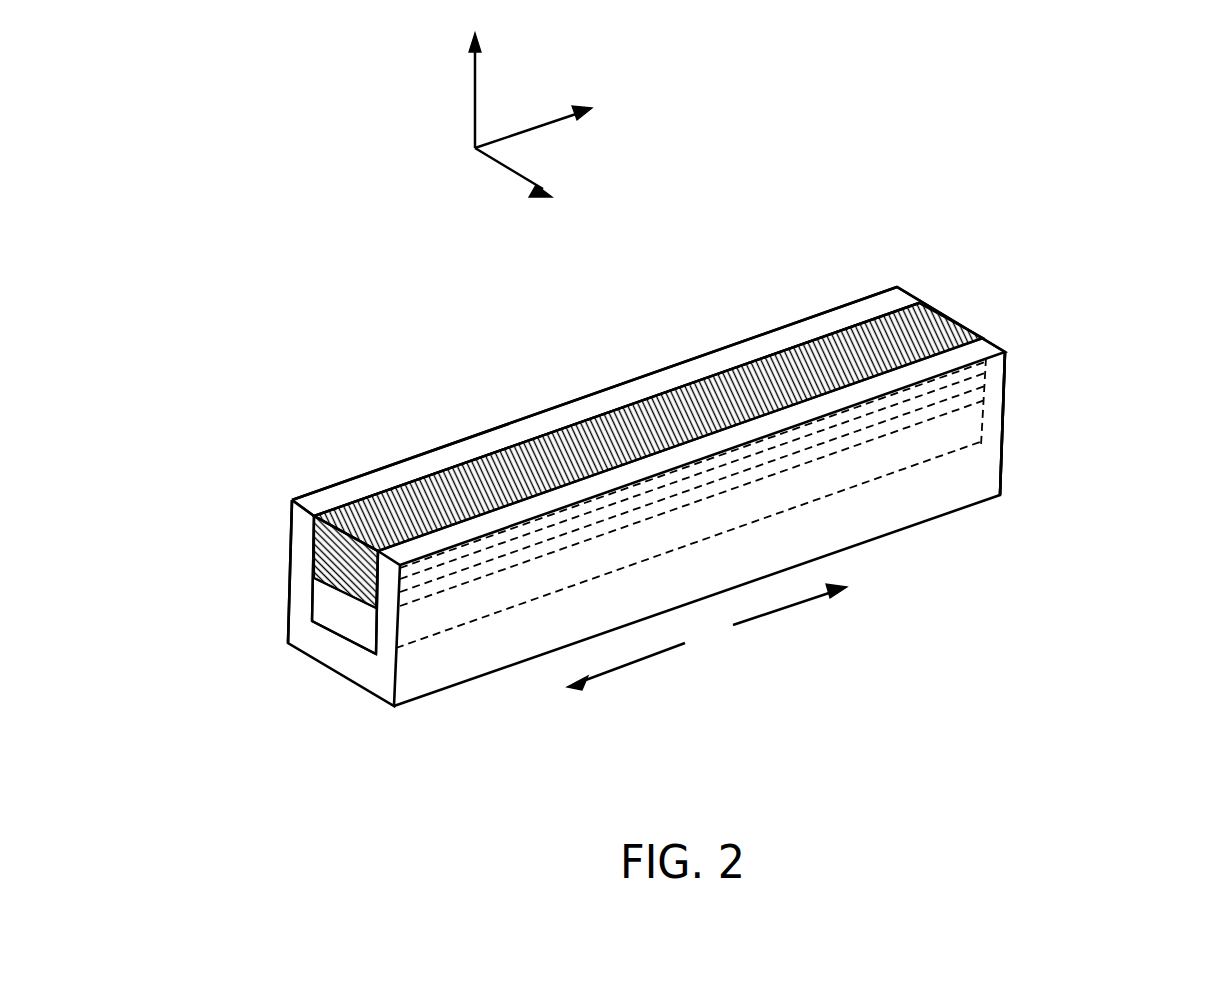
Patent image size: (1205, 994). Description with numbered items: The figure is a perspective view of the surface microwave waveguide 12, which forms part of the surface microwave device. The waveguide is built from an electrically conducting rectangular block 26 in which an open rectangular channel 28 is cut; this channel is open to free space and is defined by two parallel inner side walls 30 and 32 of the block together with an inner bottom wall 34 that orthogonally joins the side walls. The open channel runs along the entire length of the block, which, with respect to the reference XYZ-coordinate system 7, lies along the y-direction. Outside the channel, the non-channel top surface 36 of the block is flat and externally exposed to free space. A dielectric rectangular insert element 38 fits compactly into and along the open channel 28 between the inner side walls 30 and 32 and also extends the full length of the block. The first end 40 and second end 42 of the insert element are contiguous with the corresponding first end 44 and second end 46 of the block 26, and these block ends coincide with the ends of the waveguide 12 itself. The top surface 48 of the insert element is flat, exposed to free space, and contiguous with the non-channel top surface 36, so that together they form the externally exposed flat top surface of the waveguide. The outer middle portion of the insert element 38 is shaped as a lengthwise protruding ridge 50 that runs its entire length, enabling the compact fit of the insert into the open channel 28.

The reference XYZ-coordinate system 7 is at (529, 126).
The surface microwave waveguide 12 is at (734, 637).
The electrically conducting rectangular block 26 is at (646, 496).
The open rectangular channel 28 is at (362, 623).
The inner side wall 30 is at (313, 597).
The inner side wall 32 is at (395, 647).
The inner bottom wall 34 is at (348, 643).
The non-channel top surface 36 is at (422, 465).
The dielectric rectangular insert element 38 is at (823, 333).
The first end 40 is at (355, 504).
The second end 42 is at (950, 318).
The first end 44 is at (292, 510).
The second end 46 is at (1005, 395).
The top surface 48 is at (488, 473).
The lengthwise protruding ridge 50 is at (313, 537).